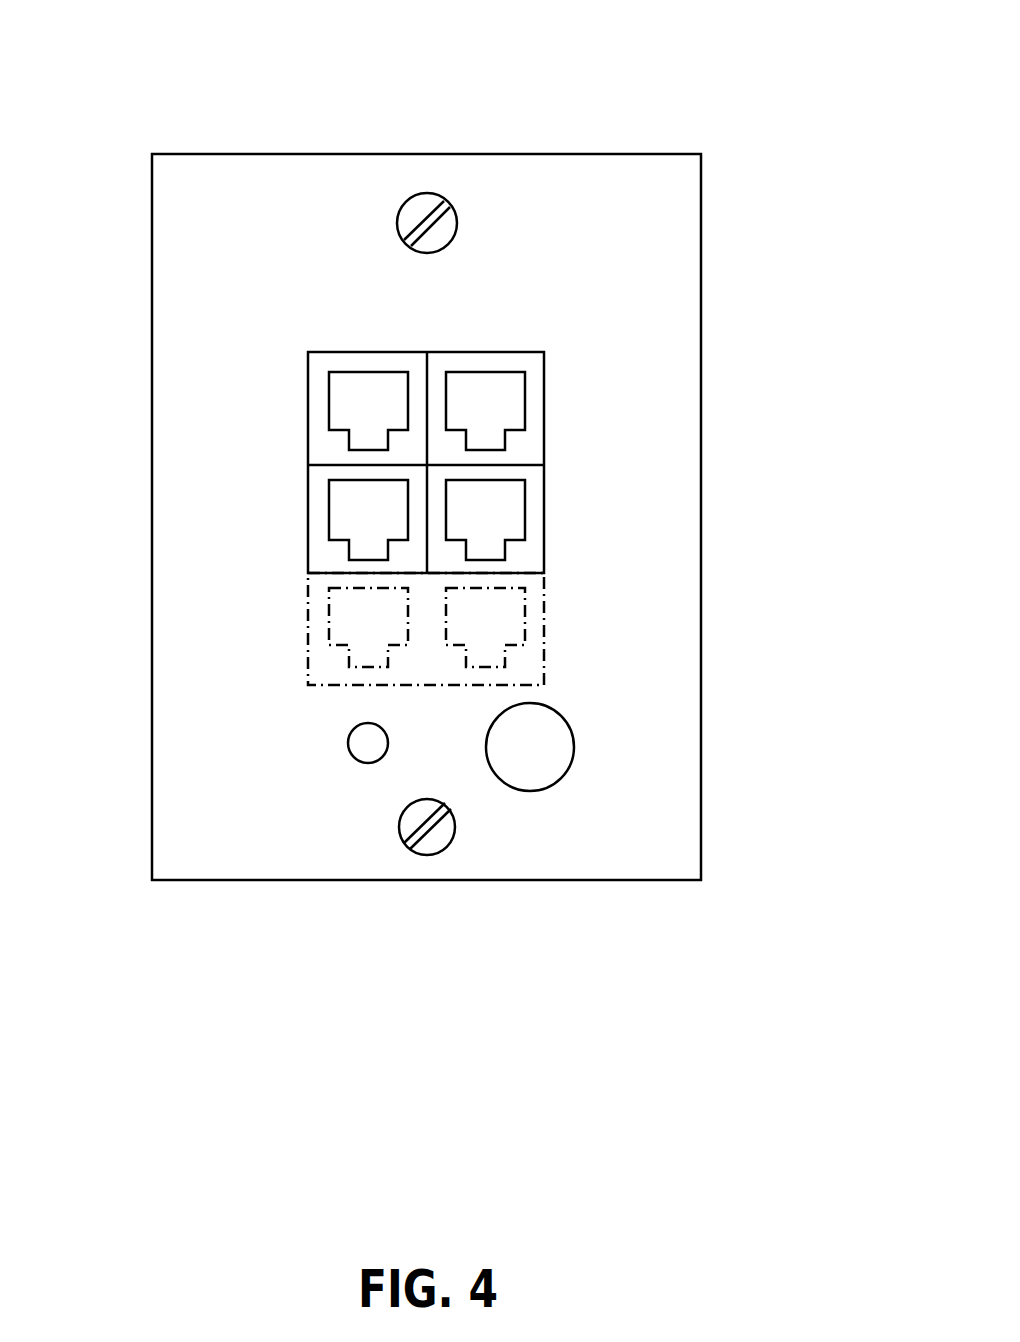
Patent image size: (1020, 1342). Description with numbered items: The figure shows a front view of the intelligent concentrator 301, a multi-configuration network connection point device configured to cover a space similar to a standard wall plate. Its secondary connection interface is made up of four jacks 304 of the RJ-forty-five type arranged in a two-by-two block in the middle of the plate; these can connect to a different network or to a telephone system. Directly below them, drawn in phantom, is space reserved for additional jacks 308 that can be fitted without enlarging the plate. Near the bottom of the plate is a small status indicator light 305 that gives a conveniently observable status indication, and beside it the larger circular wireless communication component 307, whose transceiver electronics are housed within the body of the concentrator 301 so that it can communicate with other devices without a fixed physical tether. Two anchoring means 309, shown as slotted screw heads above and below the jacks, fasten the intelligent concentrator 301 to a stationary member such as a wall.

The intelligent concentrator 301 is at (426, 442).
The RJ-45 jacks 304 is at (286, 462).
The status indicator light 305 is at (225, 866).
The wireless communication component 307 is at (659, 856).
The additional jacks 308 is at (619, 619).
The anchoring means 309 is at (458, 223).